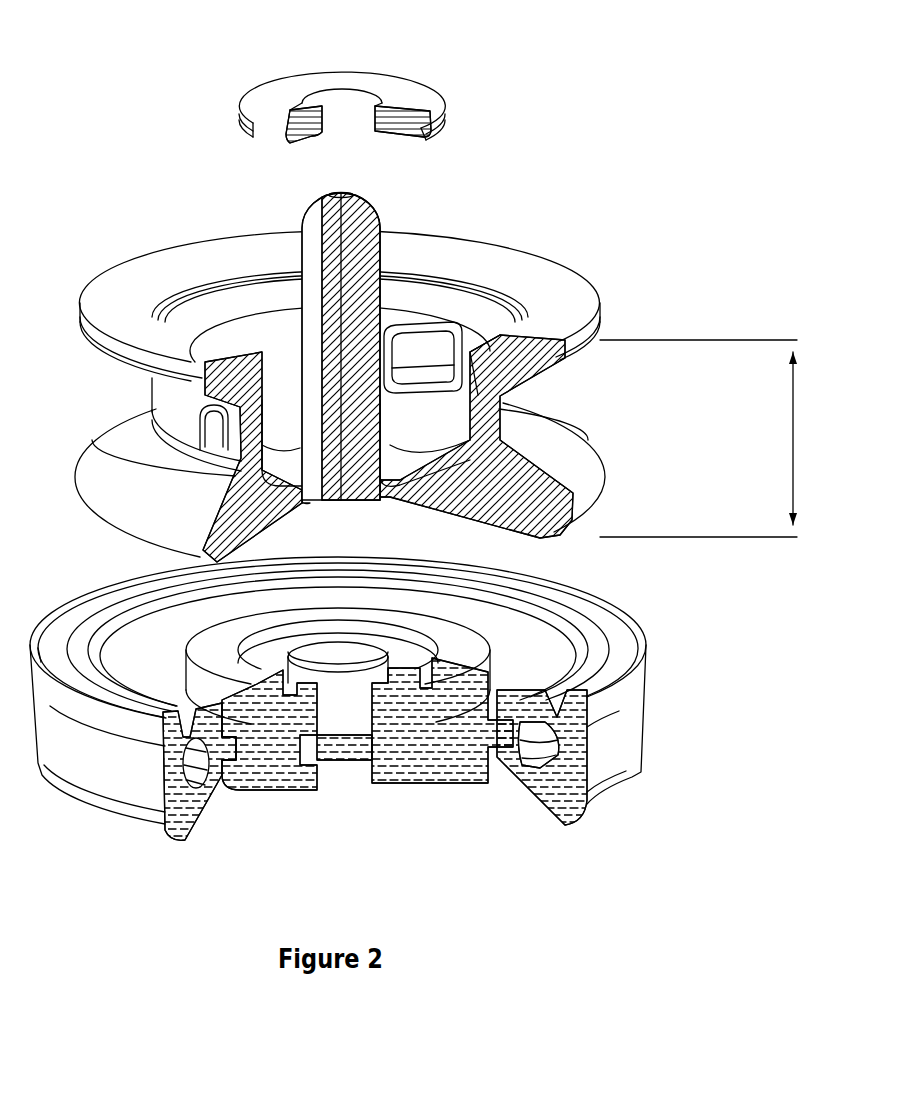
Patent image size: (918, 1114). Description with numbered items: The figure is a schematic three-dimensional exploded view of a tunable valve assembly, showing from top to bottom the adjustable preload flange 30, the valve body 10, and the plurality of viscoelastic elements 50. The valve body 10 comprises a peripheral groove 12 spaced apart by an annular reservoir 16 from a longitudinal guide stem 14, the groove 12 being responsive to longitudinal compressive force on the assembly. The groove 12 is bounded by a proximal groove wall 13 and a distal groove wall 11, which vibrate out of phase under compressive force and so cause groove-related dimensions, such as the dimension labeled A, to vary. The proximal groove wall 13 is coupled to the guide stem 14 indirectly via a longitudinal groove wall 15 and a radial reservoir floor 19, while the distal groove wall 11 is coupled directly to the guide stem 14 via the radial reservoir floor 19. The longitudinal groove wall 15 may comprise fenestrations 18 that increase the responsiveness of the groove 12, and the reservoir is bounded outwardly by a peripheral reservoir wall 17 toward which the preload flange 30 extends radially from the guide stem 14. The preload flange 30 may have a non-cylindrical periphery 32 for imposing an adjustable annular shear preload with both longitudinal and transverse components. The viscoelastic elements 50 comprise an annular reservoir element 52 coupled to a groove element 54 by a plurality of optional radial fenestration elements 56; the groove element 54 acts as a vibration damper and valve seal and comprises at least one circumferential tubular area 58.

The valve body 10 is at (430, 502).
The distal groove wall 11 is at (543, 458).
The peripheral groove 12 is at (648, 387).
The proximal groove wall 13 is at (537, 377).
The longitudinal guide stem 14 is at (387, 213).
The longitudinal groove wall 15 is at (170, 402).
The annular reservoir 16 is at (253, 227).
The peripheral reservoir wall 17 is at (245, 325).
The fenestrations 18 is at (400, 360).
The radial reservoir floor 19 is at (267, 430).
The adjustable preload flange 30 is at (437, 72).
The non-cylindrical periphery 32 is at (435, 137).
The viscoelastic elements 50 is at (653, 725).
The annular reservoir element 52 is at (390, 773).
The groove element 54 is at (543, 803).
The radial fenestration elements 56 is at (477, 747).
The circumferential tubular area 58 is at (525, 742).